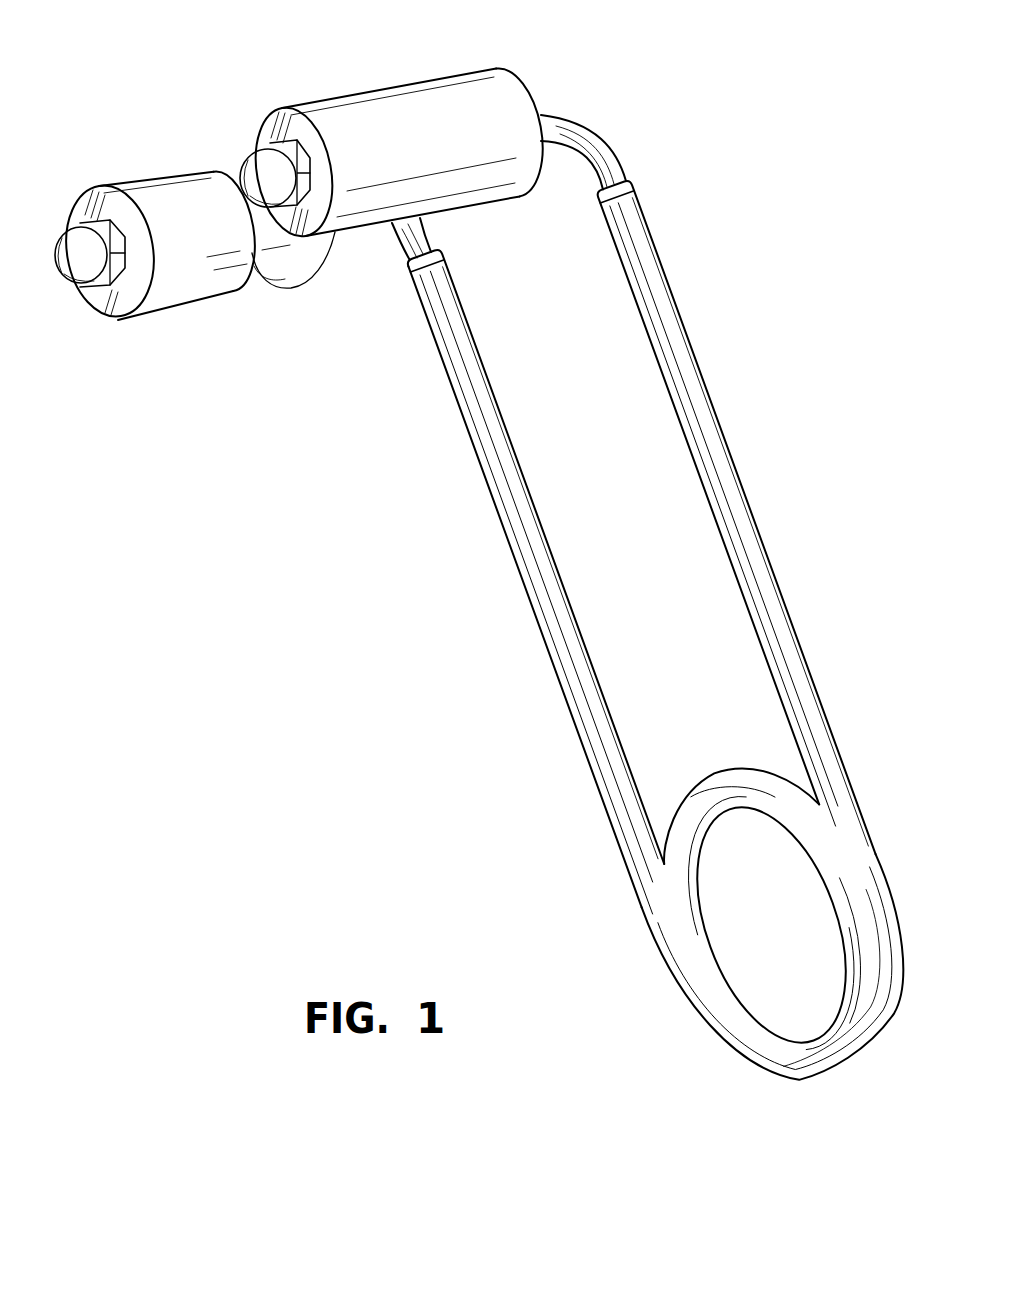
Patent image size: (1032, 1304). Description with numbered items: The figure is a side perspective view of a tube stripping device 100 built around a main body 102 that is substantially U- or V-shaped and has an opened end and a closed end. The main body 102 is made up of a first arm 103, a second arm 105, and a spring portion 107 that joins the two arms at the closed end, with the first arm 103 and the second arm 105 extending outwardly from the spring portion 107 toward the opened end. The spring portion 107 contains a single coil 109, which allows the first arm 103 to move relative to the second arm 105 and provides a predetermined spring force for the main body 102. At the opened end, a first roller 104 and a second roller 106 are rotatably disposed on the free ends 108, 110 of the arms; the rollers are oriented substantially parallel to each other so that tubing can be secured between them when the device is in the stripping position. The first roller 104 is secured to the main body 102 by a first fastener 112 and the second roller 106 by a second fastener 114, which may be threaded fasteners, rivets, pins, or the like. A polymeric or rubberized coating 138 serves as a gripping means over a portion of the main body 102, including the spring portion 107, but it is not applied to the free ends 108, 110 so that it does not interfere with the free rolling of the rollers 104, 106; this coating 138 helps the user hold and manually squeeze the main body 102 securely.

The tube stripping device 100 is at (663, 222).
The main body 102 is at (617, 162).
The first arm 103 is at (718, 420).
The first roller 104 is at (381, 88).
The second arm 105 is at (498, 518).
The second roller 106 is at (141, 177).
The spring portion 107 is at (823, 1082).
The free end 108 is at (588, 128).
The coil 109 is at (727, 770).
The free end 110 is at (392, 235).
The first fastener 112 is at (258, 174).
The second fastener 114 is at (68, 252).
The polymeric or rubberized coating 138 is at (530, 609).